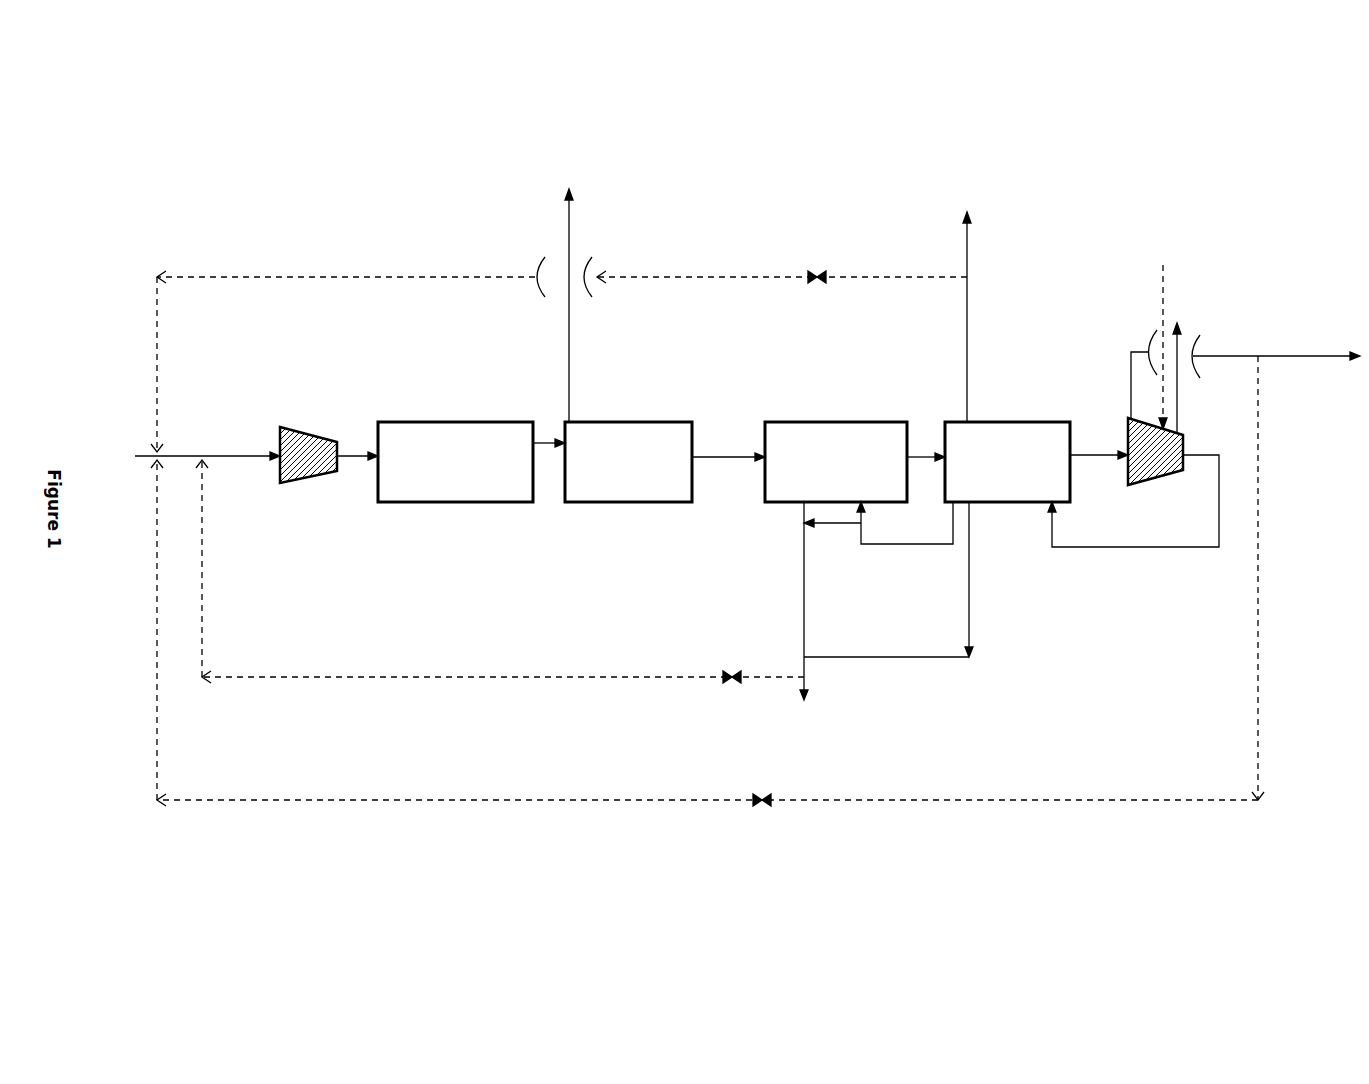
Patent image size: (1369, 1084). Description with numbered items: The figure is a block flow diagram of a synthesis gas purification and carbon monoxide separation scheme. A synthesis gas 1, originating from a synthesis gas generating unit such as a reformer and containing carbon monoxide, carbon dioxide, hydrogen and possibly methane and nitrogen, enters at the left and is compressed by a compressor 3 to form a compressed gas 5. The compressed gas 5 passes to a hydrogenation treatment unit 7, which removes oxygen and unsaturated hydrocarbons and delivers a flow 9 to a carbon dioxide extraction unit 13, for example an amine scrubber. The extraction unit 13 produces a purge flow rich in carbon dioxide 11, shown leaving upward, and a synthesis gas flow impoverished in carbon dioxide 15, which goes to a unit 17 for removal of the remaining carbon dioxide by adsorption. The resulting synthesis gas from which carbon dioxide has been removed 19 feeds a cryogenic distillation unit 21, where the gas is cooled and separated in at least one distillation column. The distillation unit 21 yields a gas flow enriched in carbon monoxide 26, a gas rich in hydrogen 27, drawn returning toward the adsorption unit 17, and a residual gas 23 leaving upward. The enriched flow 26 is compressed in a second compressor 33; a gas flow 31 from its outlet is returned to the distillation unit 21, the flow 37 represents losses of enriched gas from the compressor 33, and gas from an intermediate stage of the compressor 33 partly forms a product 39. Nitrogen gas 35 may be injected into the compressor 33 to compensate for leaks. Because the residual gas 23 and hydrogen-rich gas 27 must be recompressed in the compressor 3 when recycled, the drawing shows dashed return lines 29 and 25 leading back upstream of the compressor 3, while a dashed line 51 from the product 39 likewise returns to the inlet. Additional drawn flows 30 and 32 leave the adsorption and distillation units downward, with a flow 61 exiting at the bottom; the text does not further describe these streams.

The synthesis gas 1 is at (143, 449).
The compressor 3 is at (318, 432).
The compressed gas 5 is at (343, 460).
The hydrogenation treatment unit 7 is at (455, 462).
The flow 9 is at (536, 445).
The purge flow rich in CO2 11 is at (568, 235).
The CO2 extraction unit 13 is at (628, 462).
The synthesis gas flow impoverished in CO2 15 is at (718, 460).
The unit for the removal of CO2 by adsorption 17 is at (836, 462).
The synthesis gas from which CO2 has been removed 19 is at (912, 460).
The cryogenic distillation unit 21 is at (1007, 462).
The residual gas 23 is at (965, 242).
The recycle stream 25 is at (557, 678).
The gas flow enriched in carbon monoxide 26 is at (1083, 458).
The gas rich in hydrogen 27 is at (880, 545).
The recycle stream 29 is at (728, 278).
The bottom stream 30 is at (805, 587).
The gas flow 31 is at (1145, 548).
The stream 32 is at (970, 583).
The compressor 33 is at (1158, 477).
The nitrogen gas 35 is at (1162, 310).
The flow 37 is at (1178, 423).
The product 39 is at (1292, 358).
The recycle stream 51 is at (1258, 638).
The outlet stream 61 is at (807, 695).